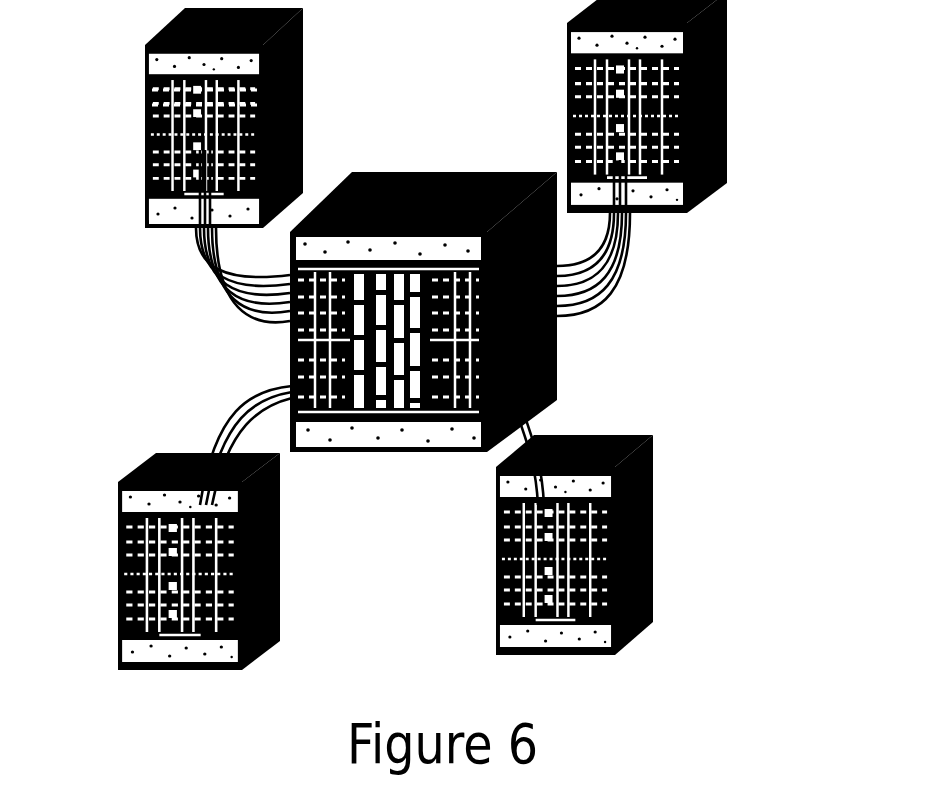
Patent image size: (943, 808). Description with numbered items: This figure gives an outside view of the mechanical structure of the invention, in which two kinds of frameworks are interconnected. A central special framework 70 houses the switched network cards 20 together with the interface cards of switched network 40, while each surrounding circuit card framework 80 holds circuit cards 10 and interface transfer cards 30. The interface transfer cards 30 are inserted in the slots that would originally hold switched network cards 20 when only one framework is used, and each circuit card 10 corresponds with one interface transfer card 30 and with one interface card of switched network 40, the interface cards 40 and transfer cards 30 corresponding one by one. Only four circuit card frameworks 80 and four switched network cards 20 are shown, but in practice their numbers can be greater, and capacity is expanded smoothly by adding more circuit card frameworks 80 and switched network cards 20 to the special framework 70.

The circuit card 10 is at (146, 195).
The switched network card 20 is at (292, 338).
The interface transfer card 30 is at (143, 119).
The interface card of switched network 40 is at (292, 336).
The special framework 70 is at (501, 312).
The circuit card framework 80 is at (480, 335).